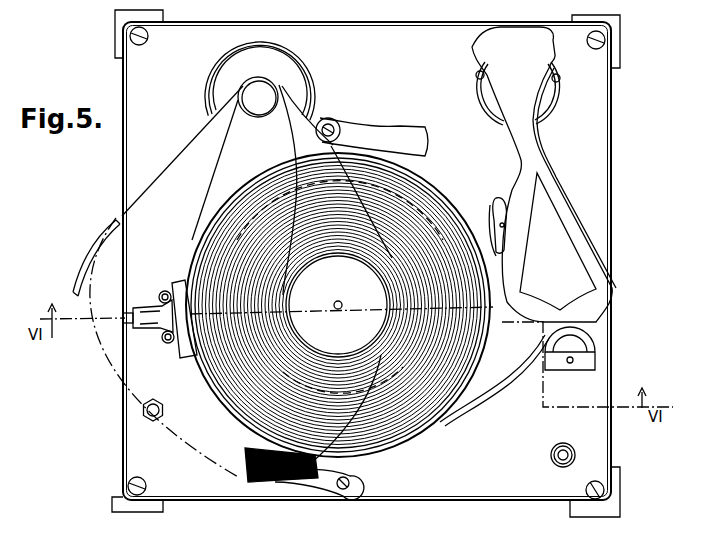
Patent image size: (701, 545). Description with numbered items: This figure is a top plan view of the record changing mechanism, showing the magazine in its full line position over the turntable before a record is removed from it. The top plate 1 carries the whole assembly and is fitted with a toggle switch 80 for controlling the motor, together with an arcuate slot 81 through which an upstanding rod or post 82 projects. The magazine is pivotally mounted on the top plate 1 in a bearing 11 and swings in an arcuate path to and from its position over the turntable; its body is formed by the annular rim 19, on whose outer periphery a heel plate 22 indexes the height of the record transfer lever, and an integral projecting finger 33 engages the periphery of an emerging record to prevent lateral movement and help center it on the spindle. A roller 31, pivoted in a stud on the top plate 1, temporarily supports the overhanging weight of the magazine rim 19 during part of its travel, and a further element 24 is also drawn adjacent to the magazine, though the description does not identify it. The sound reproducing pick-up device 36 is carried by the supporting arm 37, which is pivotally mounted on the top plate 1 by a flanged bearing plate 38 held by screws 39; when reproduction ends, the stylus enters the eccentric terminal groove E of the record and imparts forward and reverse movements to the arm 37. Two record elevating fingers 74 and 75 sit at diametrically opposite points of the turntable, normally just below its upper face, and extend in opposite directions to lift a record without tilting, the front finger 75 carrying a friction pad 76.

The top plate 1 is at (598, 156).
The bearing 11 is at (287, 80).
The annular rim 19 is at (418, 176).
The heel plate 22 is at (186, 352).
The adjusting lever 24 is at (162, 323).
The roller 31 is at (153, 421).
The projecting finger 33 is at (500, 390).
The electric pick-up device 36 is at (568, 362).
The supporting arm 37 is at (546, 150).
The flanged bearing plate 38 is at (557, 98).
The screws 39 is at (480, 80).
The record elevating finger 74 is at (368, 140).
The front record elevating finger 75 is at (330, 485).
The friction pad 76 is at (244, 458).
The toggle switch 80 is at (568, 448).
The arcuate slot 81 is at (500, 199).
The upstanding rod or post 82 is at (494, 222).
The eccentric terminal groove E is at (290, 291).